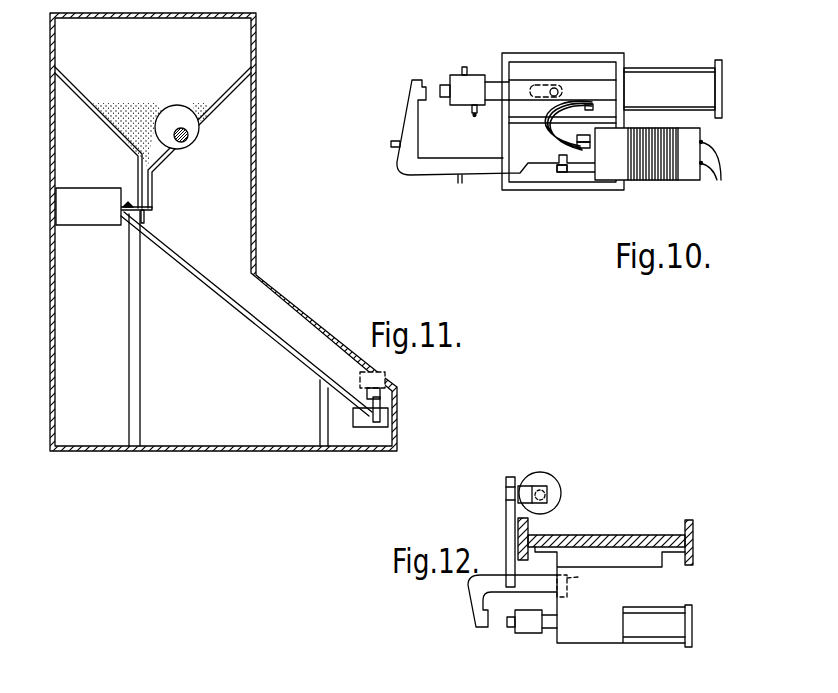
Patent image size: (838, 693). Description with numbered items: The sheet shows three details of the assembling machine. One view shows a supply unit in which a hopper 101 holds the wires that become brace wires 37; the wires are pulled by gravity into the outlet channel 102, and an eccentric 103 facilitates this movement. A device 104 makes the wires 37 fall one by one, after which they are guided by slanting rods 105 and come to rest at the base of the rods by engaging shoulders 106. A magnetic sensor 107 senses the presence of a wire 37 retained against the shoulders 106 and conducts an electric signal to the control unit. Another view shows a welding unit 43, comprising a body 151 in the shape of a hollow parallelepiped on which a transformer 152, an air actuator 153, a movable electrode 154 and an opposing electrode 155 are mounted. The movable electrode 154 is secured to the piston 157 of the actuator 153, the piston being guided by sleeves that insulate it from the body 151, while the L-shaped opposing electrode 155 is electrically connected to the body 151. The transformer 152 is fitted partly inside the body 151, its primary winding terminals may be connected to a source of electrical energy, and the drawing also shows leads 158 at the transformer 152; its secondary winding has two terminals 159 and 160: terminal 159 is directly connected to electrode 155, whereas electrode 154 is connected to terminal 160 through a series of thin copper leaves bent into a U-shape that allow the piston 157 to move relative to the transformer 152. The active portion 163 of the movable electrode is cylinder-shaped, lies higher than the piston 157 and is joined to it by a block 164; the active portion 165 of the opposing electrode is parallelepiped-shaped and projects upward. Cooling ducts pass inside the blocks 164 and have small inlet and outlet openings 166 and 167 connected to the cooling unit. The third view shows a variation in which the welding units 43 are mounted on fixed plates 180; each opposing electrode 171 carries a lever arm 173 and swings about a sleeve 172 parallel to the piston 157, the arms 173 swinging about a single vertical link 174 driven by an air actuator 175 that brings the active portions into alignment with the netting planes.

In FIG. 11, the brace wire 37 is at (132, 118).
In FIG. 11, the hopper 101 is at (285, 281).
In FIG. 11, the outlet channel 102 is at (153, 195).
In FIG. 11, the eccentric 103 is at (182, 115).
In FIG. 11, the device 104 is at (97, 218).
In FIG. 11, the slanting rods 105 is at (207, 270).
In FIG. 11, the shoulders 106 is at (383, 403).
In FIG. 11, the magnetic sensor 107 is at (388, 419).
In FIG. 10, the welding unit 43 is at (622, 27).
In FIG. 10, the body 151 is at (543, 57).
In FIG. 10, the transformer 152 is at (685, 173).
In FIG. 10, the air actuator 153 is at (658, 80).
In FIG. 10, the movable electrode 154 is at (478, 55).
In FIG. 10, the opposing electrode 155 is at (399, 108).
In FIG. 10, the piston 157 is at (568, 92).
In FIG. 10, the leads 158 is at (719, 175).
In FIG. 10, the terminal 159 is at (565, 172).
In FIG. 10, the terminal 160 is at (590, 142).
In FIG. 10, the block 164 is at (462, 68).
In FIG. 10, the active portion of opposing electrode 165 is at (436, 88).
In FIG. 12, the active portion of opposing electrode 165 is at (482, 627).
In FIG. 10, the inlet opening 166 is at (440, 85).
In FIG. 10, the outlet opening 167 is at (475, 117).
In FIG. 12, the opposing electrode 171 is at (477, 593).
In FIG. 12, the sleeve 172 is at (568, 590).
In FIG. 12, the lever arm 173 is at (508, 512).
In FIG. 12, the vertical link 174 is at (533, 487).
In FIG. 12, the air actuator 175 is at (562, 495).
In FIG. 12, the fixed plate 180 is at (637, 538).
In FIG. 12, the active portion of movable electrode 163 is at (507, 626).